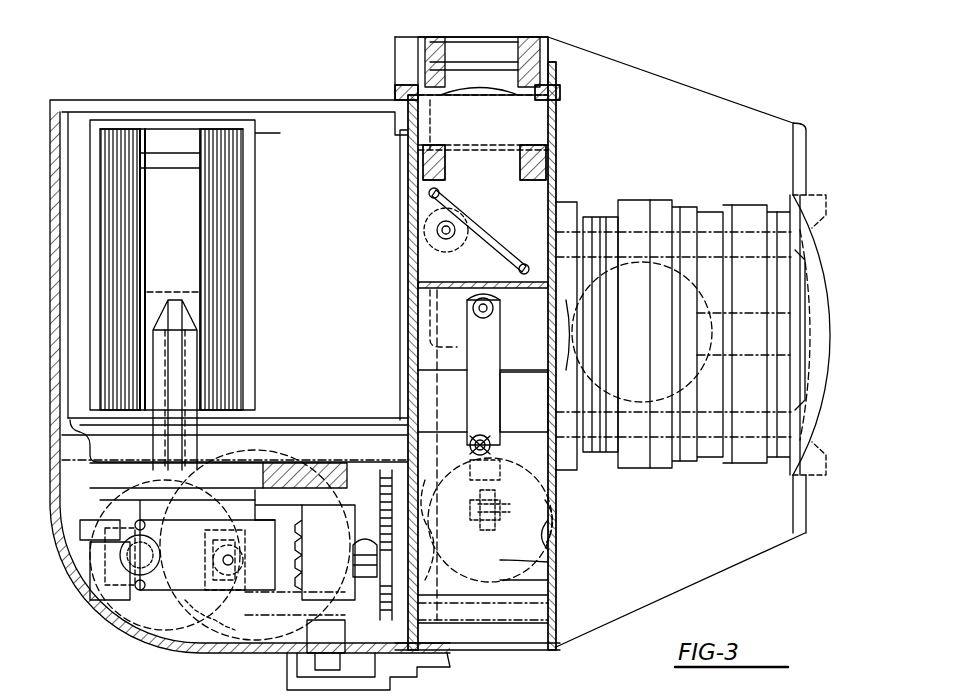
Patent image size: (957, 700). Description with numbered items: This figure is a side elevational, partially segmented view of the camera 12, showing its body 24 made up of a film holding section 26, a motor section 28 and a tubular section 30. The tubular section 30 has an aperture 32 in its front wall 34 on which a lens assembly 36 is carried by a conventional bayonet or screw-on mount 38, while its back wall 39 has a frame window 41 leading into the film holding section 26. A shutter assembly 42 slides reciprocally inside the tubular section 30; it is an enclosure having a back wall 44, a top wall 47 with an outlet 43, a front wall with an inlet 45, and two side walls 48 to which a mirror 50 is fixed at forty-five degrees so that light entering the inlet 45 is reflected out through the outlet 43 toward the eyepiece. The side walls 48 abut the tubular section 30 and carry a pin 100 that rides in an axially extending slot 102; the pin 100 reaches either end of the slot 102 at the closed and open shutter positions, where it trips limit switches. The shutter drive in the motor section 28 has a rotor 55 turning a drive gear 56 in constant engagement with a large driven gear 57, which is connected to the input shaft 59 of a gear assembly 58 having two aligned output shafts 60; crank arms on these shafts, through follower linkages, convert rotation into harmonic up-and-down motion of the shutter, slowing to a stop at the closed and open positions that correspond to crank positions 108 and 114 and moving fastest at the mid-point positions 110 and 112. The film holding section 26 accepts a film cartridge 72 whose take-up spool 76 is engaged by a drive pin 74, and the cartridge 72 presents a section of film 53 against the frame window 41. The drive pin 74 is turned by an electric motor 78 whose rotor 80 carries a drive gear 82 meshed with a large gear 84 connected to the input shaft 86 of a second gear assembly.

The camera 12 is at (612, 40).
The body 24 is at (380, 95).
The film holding section 26 is at (297, 105).
The motor section 28 is at (170, 630).
The tubular section 30 is at (552, 628).
The aperture 32 is at (548, 380).
The front wall 34 is at (562, 528).
The lens assembly 36 is at (668, 475).
The mount 38 is at (560, 228).
The back wall 39 is at (406, 387).
The frame window 41 is at (400, 295).
The shutter assembly 42 is at (546, 140).
The outlet 43 is at (445, 160).
The back wall 44 is at (406, 172).
The inlet 45 is at (558, 190).
The top wall 47 is at (484, 150).
The side walls 48 is at (542, 339).
The mirror 50 is at (480, 232).
The film 53 is at (412, 358).
The rotor 55 is at (280, 640).
The drive gear 56 is at (360, 560).
The driven gear 57 is at (394, 464).
The gear assembly 58 is at (550, 563).
The input shaft 59 is at (430, 586).
The output shafts 60 is at (508, 465).
The film cartridge 72 is at (225, 129).
The drive pin 74 is at (170, 300).
The take-up spool 76 is at (195, 185).
The electric motor 78 is at (82, 542).
The rotor 80 is at (125, 580).
The drive gear 82 is at (135, 555).
The large gear 84 is at (225, 645).
The input shaft 86 is at (305, 545).
The pin 100 is at (436, 228).
The slot 102 is at (418, 254).
The position 108 is at (558, 580).
The position 110 is at (556, 542).
The position 112 is at (466, 573).
The position 114 is at (497, 446).